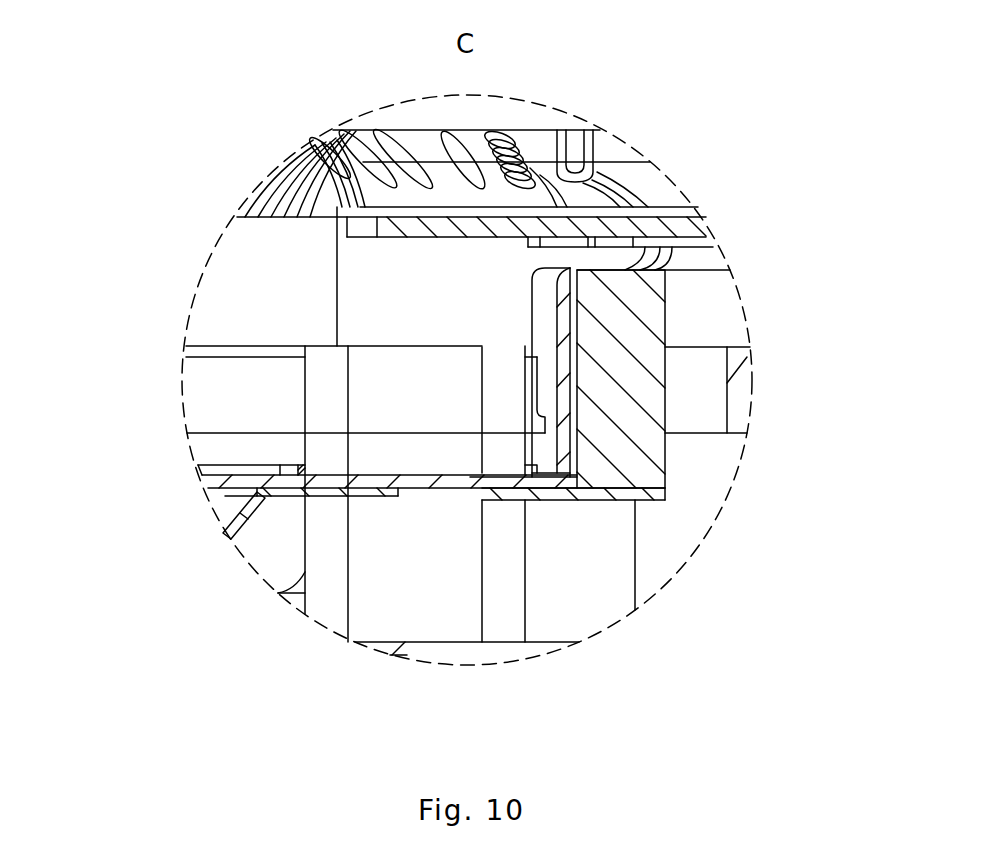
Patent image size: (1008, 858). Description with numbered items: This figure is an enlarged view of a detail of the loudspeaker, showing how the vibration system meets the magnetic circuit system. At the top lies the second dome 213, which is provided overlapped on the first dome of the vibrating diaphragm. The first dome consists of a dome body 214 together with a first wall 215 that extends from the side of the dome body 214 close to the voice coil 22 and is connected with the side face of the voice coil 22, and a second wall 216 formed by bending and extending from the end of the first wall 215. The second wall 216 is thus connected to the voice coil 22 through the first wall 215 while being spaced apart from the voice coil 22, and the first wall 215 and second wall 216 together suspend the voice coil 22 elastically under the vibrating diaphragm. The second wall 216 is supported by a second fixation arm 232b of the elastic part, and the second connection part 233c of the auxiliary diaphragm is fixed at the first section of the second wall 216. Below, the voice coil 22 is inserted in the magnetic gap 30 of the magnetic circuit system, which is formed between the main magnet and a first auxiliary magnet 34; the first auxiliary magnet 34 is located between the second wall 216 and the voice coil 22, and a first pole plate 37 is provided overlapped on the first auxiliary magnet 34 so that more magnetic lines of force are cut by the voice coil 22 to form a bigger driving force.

The second dome 213 is at (625, 228).
The dome body 214 is at (663, 243).
The first wall 215 is at (560, 340).
The voice coil 22 is at (605, 438).
The first pole plate 37 is at (413, 382).
The second wall 216 is at (340, 482).
The second connection part 233c is at (325, 493).
The second fixation arm 232b is at (600, 493).
The first auxiliary magnet 34 is at (405, 583).
The magnetic gap 30 is at (573, 583).